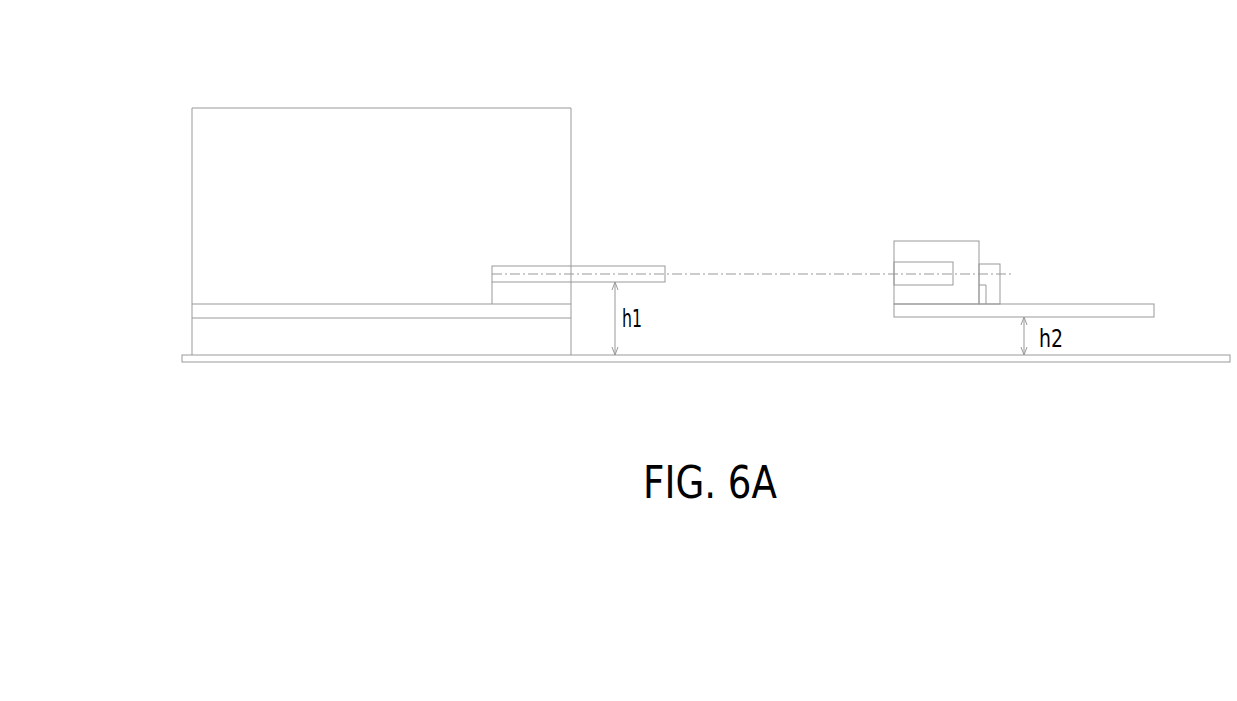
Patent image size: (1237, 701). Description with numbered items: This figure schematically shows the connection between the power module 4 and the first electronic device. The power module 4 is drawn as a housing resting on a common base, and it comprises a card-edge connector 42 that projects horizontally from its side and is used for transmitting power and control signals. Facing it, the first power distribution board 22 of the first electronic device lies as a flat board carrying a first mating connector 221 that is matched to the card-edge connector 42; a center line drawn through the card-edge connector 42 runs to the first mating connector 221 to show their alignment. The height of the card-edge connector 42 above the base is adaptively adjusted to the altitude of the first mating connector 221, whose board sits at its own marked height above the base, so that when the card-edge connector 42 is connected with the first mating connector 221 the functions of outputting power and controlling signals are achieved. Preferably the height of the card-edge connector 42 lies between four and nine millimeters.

The power module 4 is at (372, 135).
The card-edge connector 42 is at (620, 270).
The first power distribution board 22 is at (1060, 309).
The first mating connector 221 is at (917, 248).